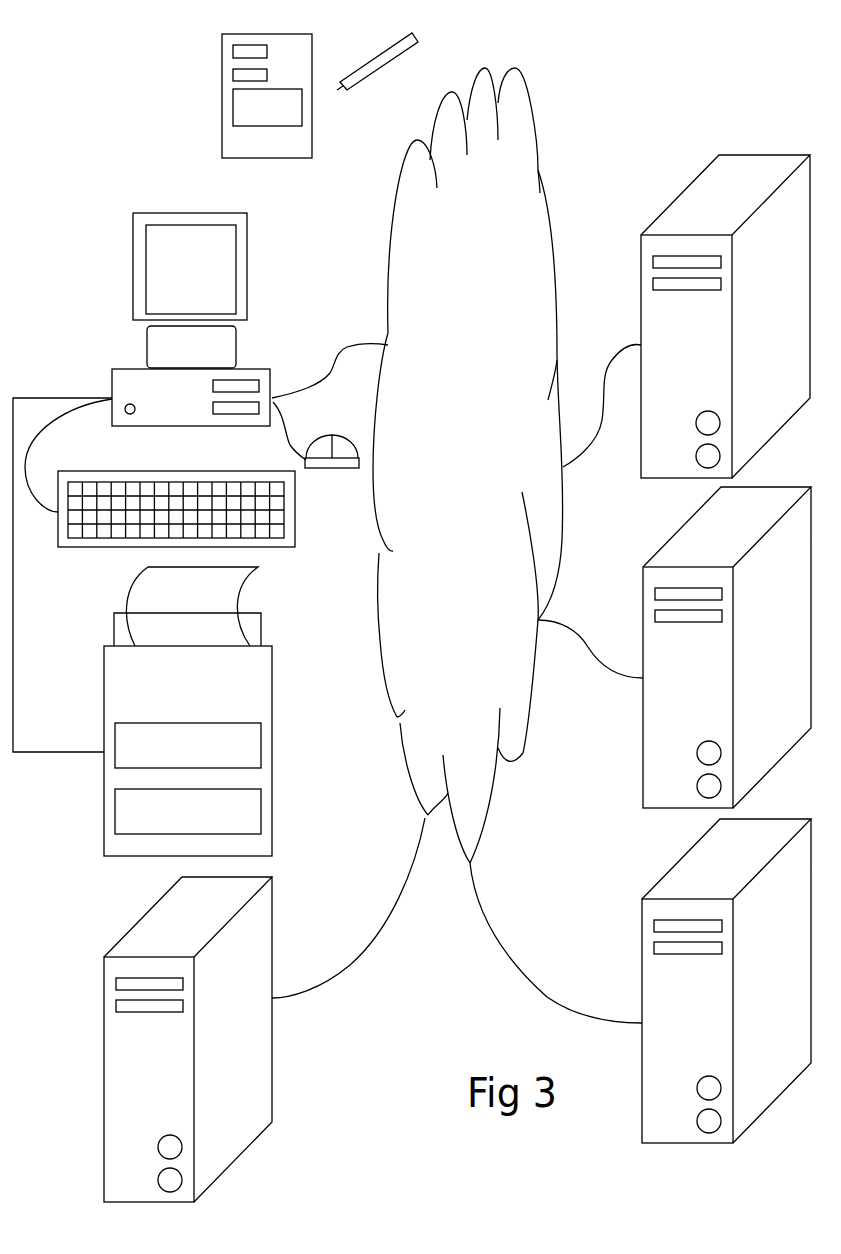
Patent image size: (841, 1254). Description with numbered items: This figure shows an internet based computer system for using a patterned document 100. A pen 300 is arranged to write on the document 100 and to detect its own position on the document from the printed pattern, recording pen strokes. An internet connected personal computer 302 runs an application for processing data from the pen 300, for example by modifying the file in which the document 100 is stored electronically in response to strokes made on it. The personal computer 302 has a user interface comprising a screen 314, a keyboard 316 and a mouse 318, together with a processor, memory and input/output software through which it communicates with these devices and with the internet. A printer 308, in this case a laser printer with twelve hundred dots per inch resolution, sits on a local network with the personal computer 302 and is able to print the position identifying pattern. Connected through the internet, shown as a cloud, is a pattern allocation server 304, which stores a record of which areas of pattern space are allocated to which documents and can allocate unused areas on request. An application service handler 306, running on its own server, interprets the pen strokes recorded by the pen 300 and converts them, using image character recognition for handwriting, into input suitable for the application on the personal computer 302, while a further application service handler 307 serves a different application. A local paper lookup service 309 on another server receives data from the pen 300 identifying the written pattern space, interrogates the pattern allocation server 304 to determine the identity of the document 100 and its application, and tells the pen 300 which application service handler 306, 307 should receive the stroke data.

The document 100 is at (222, 96).
The pen 300 is at (420, 37).
The personal computer 302 is at (112, 369).
The pattern allocation server 304 is at (272, 1000).
The application service handler 306 is at (683, 230).
The further application service handler 307 is at (687, 563).
The printer 308 is at (273, 750).
The local paper lookup service 309 is at (770, 820).
The screen 314 is at (236, 268).
The keyboard 316 is at (298, 507).
The mouse 318 is at (332, 437).